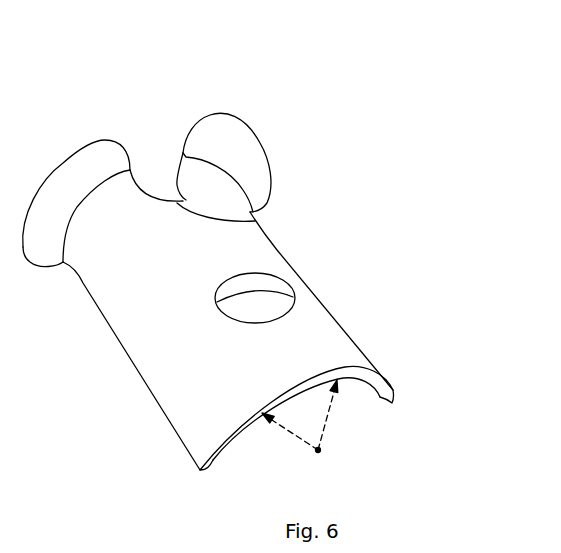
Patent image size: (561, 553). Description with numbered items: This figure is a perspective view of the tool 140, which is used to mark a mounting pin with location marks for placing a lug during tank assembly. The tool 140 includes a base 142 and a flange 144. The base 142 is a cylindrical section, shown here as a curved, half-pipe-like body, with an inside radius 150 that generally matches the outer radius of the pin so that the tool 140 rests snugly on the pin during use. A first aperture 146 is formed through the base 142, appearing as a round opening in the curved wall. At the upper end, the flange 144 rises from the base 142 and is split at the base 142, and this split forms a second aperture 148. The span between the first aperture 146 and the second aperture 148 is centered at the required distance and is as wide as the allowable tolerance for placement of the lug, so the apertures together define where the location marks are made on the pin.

The tool 140 is at (207, 60).
The base 142 is at (120, 282).
The flange 144 is at (63, 170).
The first aperture 146 is at (252, 303).
The second aperture 148 is at (255, 221).
The inside radius 150 is at (330, 415).